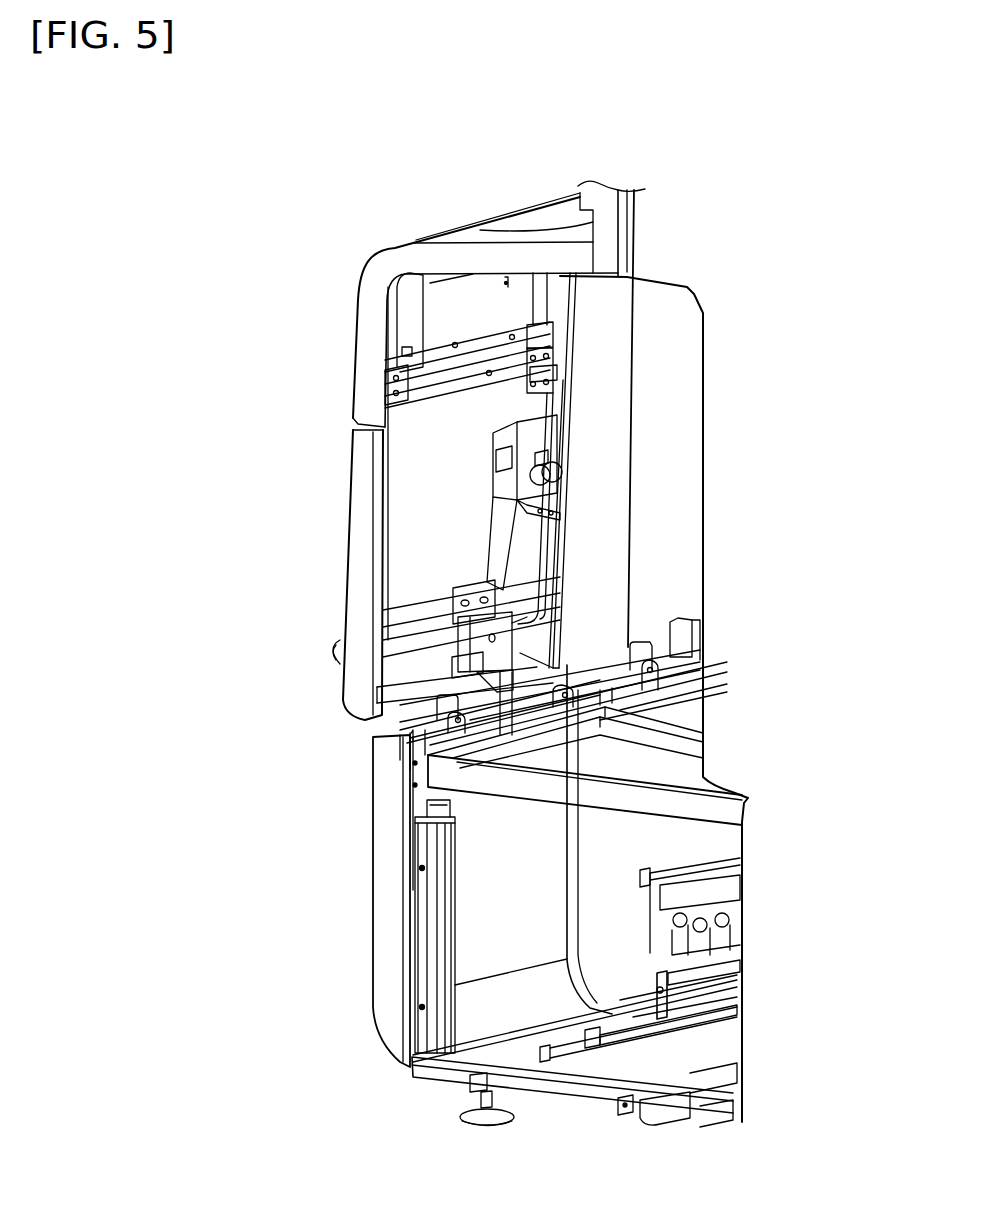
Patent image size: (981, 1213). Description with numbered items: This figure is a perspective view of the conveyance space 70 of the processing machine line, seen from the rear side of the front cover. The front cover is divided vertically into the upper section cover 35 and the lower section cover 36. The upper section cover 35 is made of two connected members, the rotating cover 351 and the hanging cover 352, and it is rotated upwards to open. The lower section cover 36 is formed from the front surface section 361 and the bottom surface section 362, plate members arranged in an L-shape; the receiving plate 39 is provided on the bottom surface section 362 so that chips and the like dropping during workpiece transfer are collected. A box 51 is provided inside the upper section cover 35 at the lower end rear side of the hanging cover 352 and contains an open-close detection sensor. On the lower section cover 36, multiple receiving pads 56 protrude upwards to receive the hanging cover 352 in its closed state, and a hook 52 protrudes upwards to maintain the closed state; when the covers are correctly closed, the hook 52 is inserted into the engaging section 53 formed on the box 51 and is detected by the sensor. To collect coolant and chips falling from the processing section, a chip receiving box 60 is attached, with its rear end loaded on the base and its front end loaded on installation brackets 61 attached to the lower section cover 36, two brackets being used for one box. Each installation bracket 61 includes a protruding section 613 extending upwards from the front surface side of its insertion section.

The upper section cover 35 is at (225, 262).
The rotating cover 351 is at (373, 317).
The hanging cover 352 is at (372, 452).
The lower section cover 36 is at (240, 865).
The front surface section 361 is at (390, 880).
The bottom surface section 362 is at (507, 1063).
The receiving plate 39 is at (633, 1053).
The box 51 is at (497, 648).
The hook 52 is at (430, 688).
The engaging section 53 is at (455, 630).
The receiving pad 56 is at (660, 683).
The chip receiving box 60 is at (640, 768).
The installation bracket 61 is at (650, 648).
The protruding section 613 is at (407, 723).
The conveyance space 70 is at (646, 495).